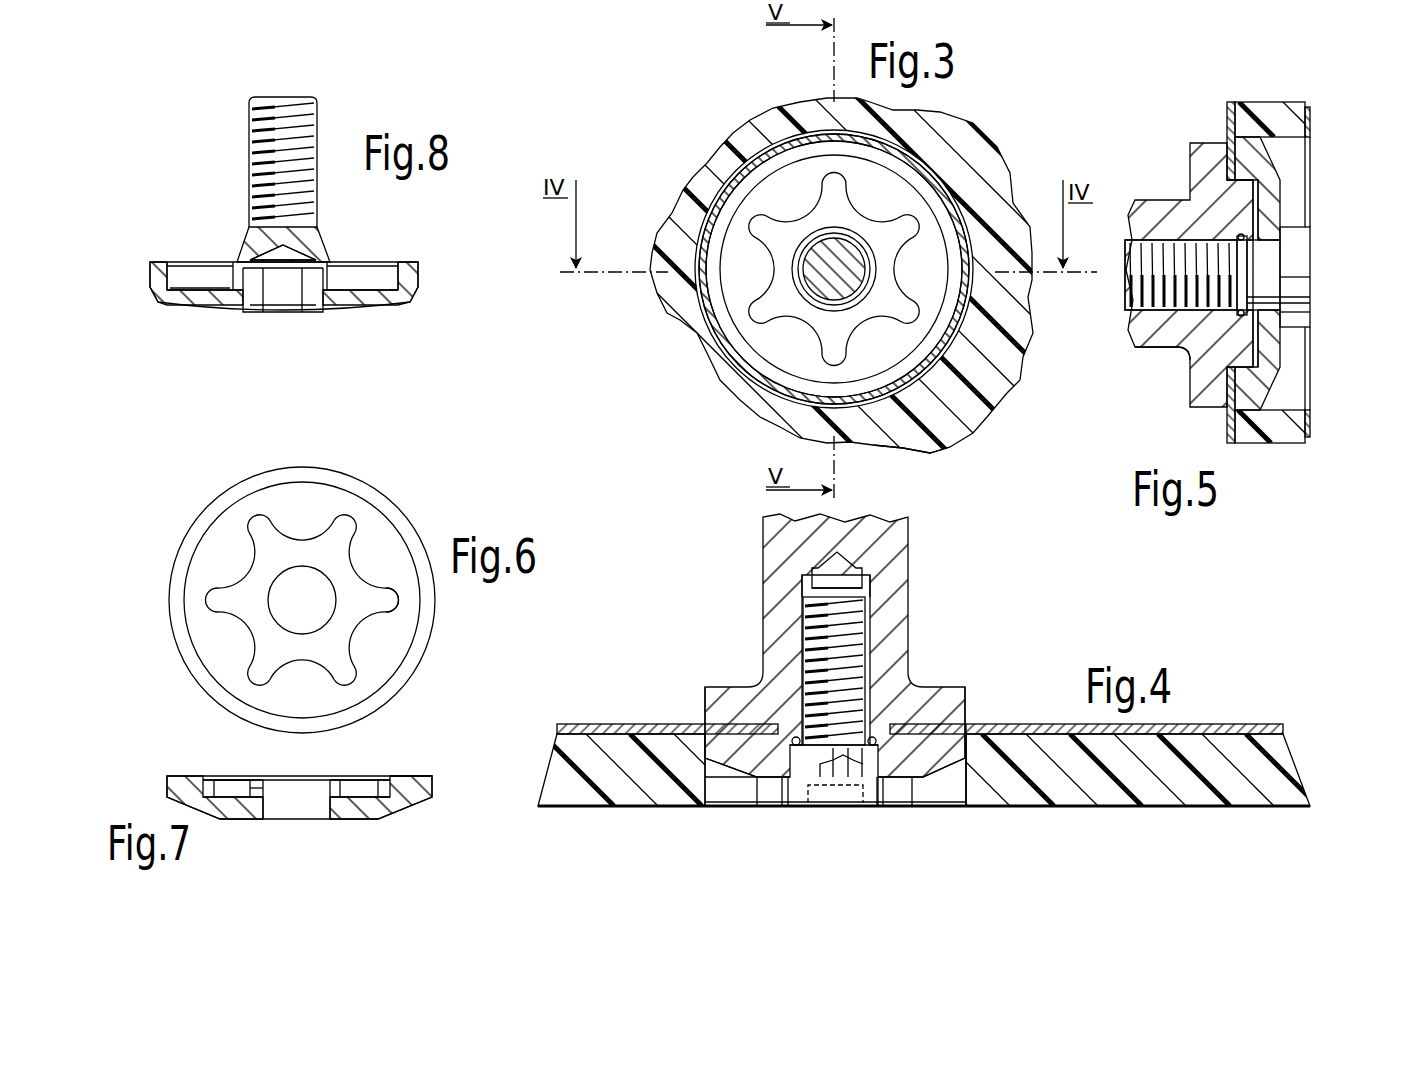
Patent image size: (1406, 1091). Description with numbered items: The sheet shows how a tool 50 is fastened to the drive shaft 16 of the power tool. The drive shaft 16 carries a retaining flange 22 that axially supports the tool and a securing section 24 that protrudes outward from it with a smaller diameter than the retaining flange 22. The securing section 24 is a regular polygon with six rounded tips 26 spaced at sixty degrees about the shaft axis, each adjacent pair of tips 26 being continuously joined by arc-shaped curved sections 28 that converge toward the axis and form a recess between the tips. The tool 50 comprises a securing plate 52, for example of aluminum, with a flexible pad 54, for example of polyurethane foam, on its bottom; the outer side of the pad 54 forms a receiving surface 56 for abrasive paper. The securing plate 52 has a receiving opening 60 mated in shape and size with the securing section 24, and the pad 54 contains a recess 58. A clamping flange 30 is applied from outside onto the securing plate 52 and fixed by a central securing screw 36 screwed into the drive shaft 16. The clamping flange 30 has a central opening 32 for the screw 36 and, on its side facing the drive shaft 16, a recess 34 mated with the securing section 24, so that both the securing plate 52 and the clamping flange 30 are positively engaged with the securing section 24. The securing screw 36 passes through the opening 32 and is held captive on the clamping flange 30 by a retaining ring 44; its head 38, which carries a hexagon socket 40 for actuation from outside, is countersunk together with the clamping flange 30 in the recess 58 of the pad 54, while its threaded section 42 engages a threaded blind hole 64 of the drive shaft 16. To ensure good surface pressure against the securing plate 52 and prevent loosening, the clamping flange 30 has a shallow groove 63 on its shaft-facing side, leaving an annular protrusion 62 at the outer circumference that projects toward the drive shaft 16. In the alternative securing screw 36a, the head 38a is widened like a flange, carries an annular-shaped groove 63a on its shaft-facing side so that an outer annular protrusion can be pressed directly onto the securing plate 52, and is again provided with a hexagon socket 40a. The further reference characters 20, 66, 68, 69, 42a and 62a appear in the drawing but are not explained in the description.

In FIG. 4, the drive shaft 16 is at (783, 562).
In FIG. 4, the fastening arrangement 20 is at (963, 818).
In FIG. 4, the retaining flange 22 is at (965, 700).
In FIG. 5, the retaining flange 22 is at (1205, 392).
In FIG. 4, the securing section 24 is at (922, 748).
In FIG. 3, the rounded tips 26 is at (919, 235).
In FIG. 5, the rounded tips 26 is at (1238, 180).
In FIG. 3, the curved sections 28 is at (970, 422).
In FIG. 3, the clamping flange 30 is at (771, 188).
In FIG. 6, the clamping flange 30 is at (378, 478).
In FIG. 7, the clamping flange 30 is at (376, 757).
In FIG. 4, the clamping flange 30 is at (950, 677).
In FIG. 5, the clamping flange 30 is at (1245, 160).
In FIG. 6, the central opening 32 is at (315, 590).
In FIG. 7, the central opening 32 is at (308, 810).
In FIG. 4, the central opening 32 is at (763, 806).
In FIG. 4, the recess 34 is at (790, 730).
In FIG. 3, the securing screw 36 is at (820, 282).
In FIG. 4, the securing screw 36 is at (867, 810).
In FIG. 5, the securing screw 36 is at (1308, 185).
In FIG. 4, the head 38 is at (800, 806).
In FIG. 5, the head 38 is at (1290, 260).
In FIG. 4, the hexagon socket 40 is at (828, 800).
In FIG. 4, the threaded section 42 is at (858, 647).
In FIG. 5, the threaded section 42 is at (1140, 250).
In FIG. 3, the retaining ring 44 is at (800, 258).
In FIG. 4, the retaining ring 44 is at (877, 740).
In FIG. 5, the retaining ring 44 is at (1215, 330).
In FIG. 4, the tool 50 is at (1236, 708).
In FIG. 4, the securing plate 52 is at (605, 730).
In FIG. 5, the securing plate 52 is at (1231, 100).
In FIG. 3, the flexible pad 54 is at (758, 118).
In FIG. 4, the flexible pad 54 is at (1250, 773).
In FIG. 5, the flexible pad 54 is at (1270, 118).
In FIG. 4, the receiving surface 56 is at (1163, 806).
In FIG. 3, the recess 58 is at (884, 325).
In FIG. 4, the recess 58 is at (970, 760).
In FIG. 5, the recess 58 is at (1308, 107).
In FIG. 4, the receiving opening 60 is at (725, 707).
In FIG. 3, the annular protrusion 62 is at (706, 309).
In FIG. 6, the annular protrusion 62 is at (200, 525).
In FIG. 7, the annular protrusion 62 is at (423, 777).
In FIG. 4, the annular protrusion 62 is at (730, 763).
In FIG. 7, the groove 63 is at (402, 775).
In FIG. 4, the groove 63 is at (703, 806).
In FIG. 4, the threaded blind hole 64 is at (862, 588).
In FIG. 6, the lobe 66 is at (390, 605).
In FIG. 7, the lobe 66 is at (260, 788).
In FIG. 6, the recess between lobes 68 is at (360, 625).
In FIG. 7, the groove 69 is at (232, 785).
In FIG. 8, the threaded pin 42a is at (307, 143).
In FIG. 8, the annular-shaped groove 63a is at (197, 273).
In FIG. 8, the annular ring 62a is at (410, 262).
In FIG. 8, the head 38a is at (247, 293).
In FIG. 8, the hexagon socket 40a is at (310, 303).
In FIG. 8, the securing screw 36a is at (380, 318).